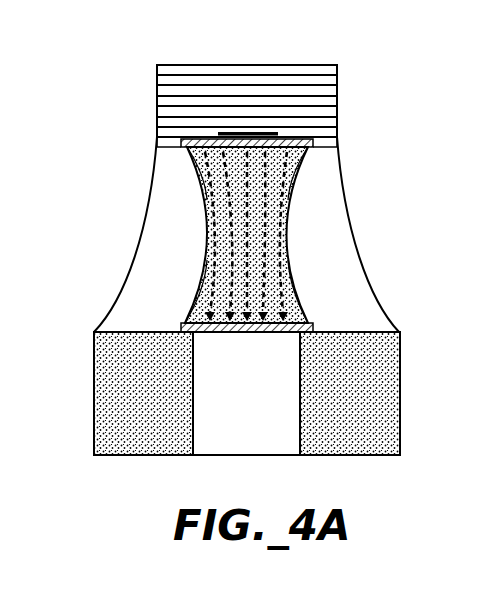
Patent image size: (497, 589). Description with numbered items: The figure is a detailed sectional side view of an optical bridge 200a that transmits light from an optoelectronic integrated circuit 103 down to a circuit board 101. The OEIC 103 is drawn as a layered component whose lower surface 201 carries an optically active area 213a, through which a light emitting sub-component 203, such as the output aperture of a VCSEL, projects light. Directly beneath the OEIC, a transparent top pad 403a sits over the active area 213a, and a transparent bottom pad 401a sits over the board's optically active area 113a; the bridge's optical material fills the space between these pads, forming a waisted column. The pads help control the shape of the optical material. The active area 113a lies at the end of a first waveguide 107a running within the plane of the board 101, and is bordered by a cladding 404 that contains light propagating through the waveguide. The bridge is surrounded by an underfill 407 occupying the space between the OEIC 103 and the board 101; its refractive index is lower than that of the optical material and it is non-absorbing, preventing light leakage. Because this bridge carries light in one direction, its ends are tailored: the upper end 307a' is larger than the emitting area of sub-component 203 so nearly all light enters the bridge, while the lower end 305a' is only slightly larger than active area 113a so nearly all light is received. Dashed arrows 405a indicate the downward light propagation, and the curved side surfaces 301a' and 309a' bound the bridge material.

The circuit board 101 is at (115, 470).
The optoelectronic integrated circuit (OEIC) 103 is at (290, 58).
The first waveguide 107a is at (243, 455).
The optically active area 113a is at (298, 343).
The optical bridge 200a is at (290, 322).
The surface 201 is at (318, 143).
The light emitting sub-component 203 is at (282, 134).
The optically active area 213a is at (188, 92).
The upper right side surface of pole tip 301a' is at (350, 181).
The end 305a' is at (130, 288).
The end 307a' is at (140, 173).
The lower right side surface of pole tip 309a' is at (358, 279).
The bottom pad 401a is at (180, 323).
The top pad 403a is at (158, 142).
The cladding 404 is at (94, 391).
The magnetic flux arrows 405a is at (285, 207).
The underfill 407 is at (148, 206).